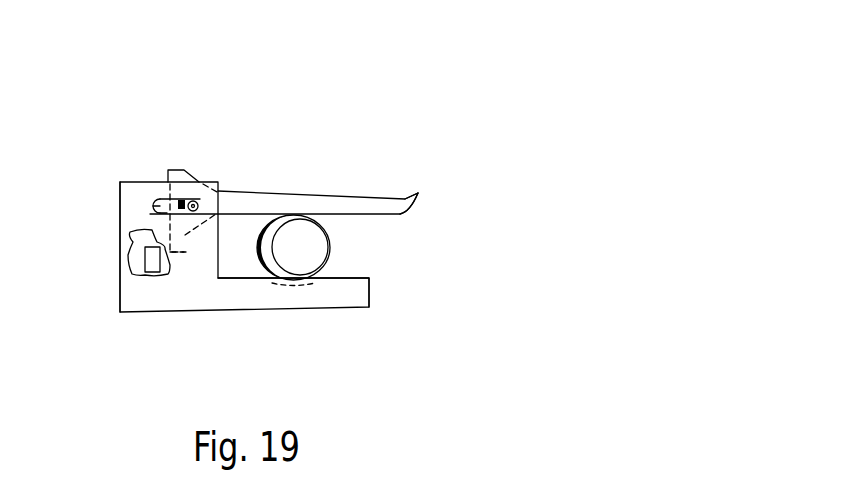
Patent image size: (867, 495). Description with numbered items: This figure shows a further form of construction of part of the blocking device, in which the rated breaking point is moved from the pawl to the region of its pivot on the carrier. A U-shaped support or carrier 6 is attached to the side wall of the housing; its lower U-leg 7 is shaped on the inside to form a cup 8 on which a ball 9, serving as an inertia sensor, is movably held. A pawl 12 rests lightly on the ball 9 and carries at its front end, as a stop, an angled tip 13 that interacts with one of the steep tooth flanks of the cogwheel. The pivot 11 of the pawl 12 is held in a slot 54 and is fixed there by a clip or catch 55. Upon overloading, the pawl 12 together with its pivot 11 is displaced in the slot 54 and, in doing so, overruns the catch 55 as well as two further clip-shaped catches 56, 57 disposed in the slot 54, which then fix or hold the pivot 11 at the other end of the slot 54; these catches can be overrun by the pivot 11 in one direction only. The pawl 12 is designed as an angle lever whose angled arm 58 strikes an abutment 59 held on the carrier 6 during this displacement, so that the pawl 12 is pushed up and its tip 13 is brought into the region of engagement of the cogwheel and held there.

The U-shaped support or carrier 6 is at (142, 215).
The lower U-leg 7 is at (270, 298).
The cup 8 is at (303, 280).
The ball 9 is at (315, 250).
The pivot 11 is at (203, 203).
The pawl 12 is at (355, 208).
The angled tip 13 is at (418, 193).
The slot 54 is at (148, 200).
The clip or catch 55 is at (204, 186).
The clip-shaped catch 56 is at (162, 196).
The clip-shaped catch 57 is at (128, 222).
The angled arm 58 is at (183, 248).
The abutment 59 is at (150, 258).